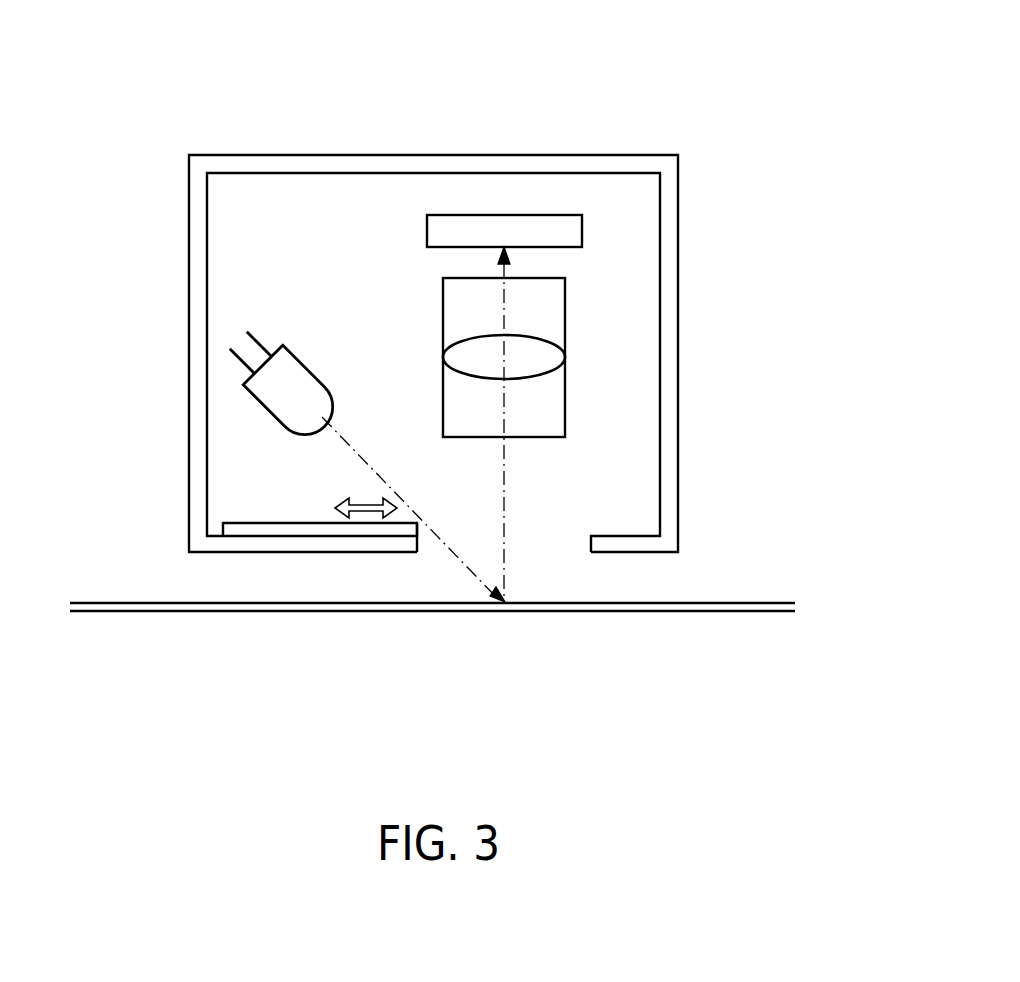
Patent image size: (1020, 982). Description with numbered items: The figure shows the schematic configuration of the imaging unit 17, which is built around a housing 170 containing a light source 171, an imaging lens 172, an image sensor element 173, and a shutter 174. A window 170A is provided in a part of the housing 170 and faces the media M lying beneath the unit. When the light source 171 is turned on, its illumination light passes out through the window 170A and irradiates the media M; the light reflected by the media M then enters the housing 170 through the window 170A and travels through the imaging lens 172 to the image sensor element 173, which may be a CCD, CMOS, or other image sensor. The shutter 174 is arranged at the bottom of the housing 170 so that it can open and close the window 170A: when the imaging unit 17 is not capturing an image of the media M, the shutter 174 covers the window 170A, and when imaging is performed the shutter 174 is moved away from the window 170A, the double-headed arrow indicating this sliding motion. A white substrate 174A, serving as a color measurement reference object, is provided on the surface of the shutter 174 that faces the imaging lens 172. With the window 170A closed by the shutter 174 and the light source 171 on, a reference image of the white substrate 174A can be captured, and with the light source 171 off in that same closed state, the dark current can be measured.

The imaging unit 17 is at (640, 97).
The housing 170 is at (357, 165).
The window 170A is at (591, 545).
The light source 171 is at (268, 417).
The imaging lens 172 is at (545, 350).
The image sensor element 173 is at (503, 230).
The shutter 174 is at (258, 530).
The white substrate 174A is at (294, 522).
The media M is at (503, 613).